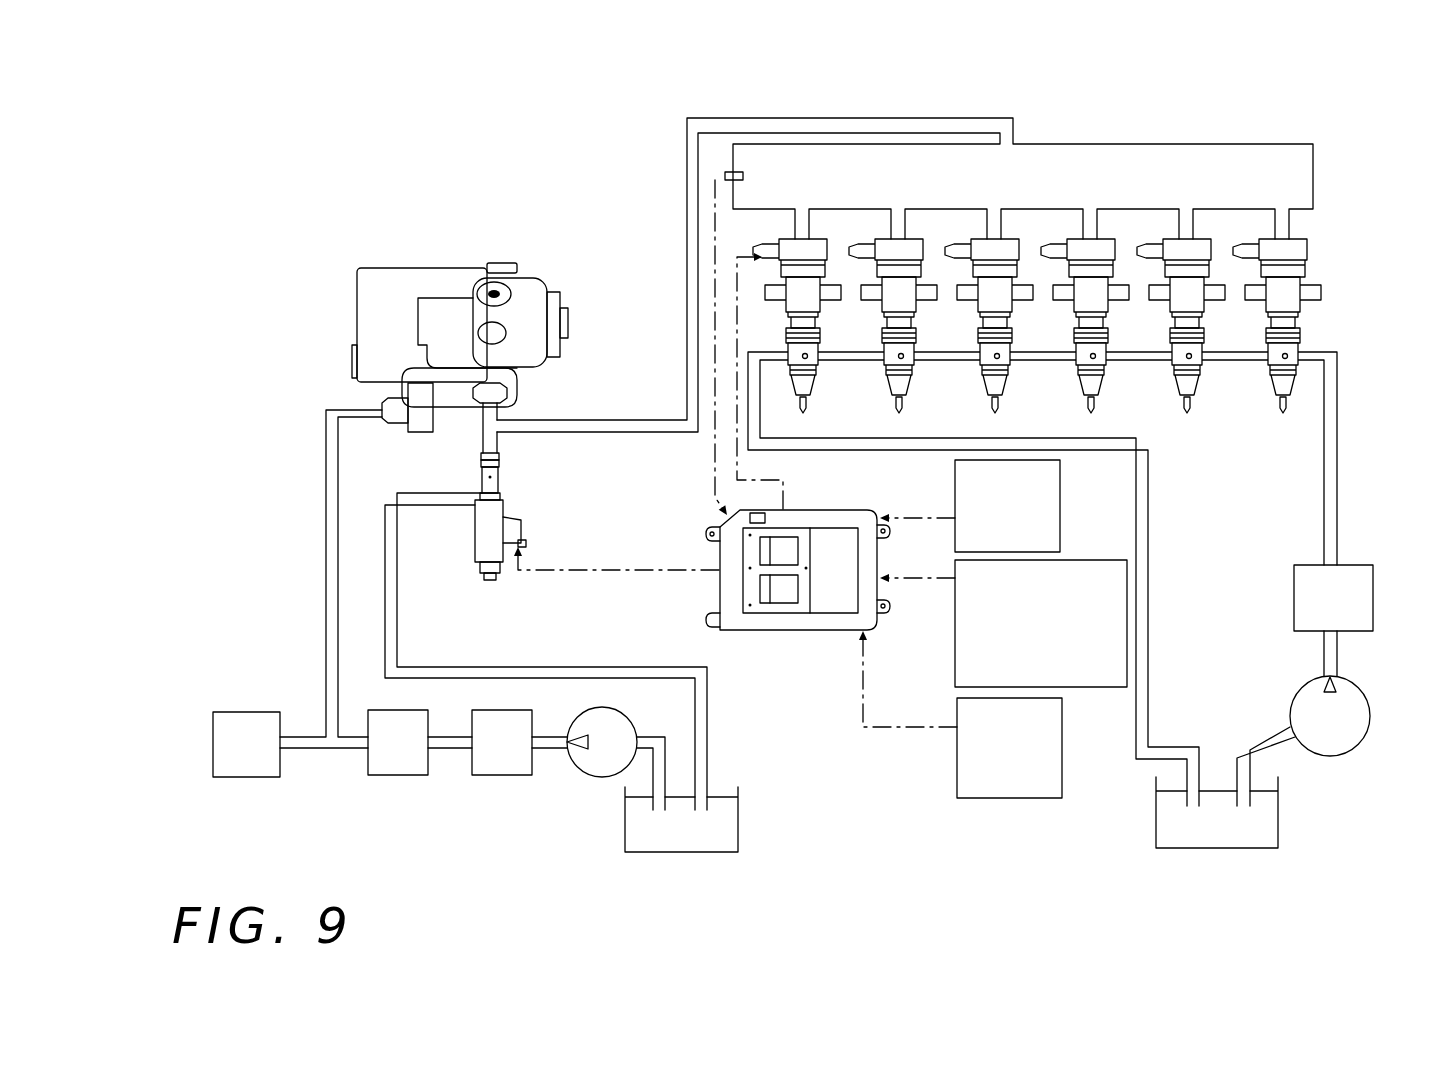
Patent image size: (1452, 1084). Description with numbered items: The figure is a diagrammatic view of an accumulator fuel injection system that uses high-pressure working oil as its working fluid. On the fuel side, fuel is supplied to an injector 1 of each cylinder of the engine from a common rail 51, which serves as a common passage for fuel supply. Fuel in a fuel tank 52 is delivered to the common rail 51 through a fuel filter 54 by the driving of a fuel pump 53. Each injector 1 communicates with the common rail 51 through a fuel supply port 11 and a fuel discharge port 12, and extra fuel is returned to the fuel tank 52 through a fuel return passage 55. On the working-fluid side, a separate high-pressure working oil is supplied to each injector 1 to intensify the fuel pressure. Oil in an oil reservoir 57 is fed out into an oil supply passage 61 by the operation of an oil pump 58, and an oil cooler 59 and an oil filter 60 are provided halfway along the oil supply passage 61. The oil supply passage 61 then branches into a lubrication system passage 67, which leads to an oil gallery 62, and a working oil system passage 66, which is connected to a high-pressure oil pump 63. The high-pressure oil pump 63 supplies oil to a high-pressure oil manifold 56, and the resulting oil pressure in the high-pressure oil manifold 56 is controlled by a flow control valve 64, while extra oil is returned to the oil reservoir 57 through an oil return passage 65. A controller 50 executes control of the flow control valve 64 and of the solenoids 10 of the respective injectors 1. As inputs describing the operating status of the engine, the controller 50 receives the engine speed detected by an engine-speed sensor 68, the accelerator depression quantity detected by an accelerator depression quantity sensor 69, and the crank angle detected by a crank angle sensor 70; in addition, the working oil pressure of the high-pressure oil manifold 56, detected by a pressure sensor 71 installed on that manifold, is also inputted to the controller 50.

The injector 1 is at (1041, 329).
The solenoid 10 is at (779, 245).
The fuel supply port 11 is at (825, 358).
The fuel discharge port 12 is at (788, 353).
The controller 50 is at (803, 621).
The common rail 51 is at (1035, 366).
The fuel tank 52 is at (1278, 832).
The fuel pump 53 is at (1371, 717).
The fuel filter 54 is at (1374, 590).
The fuel return passage 55 is at (1146, 573).
The high-pressure oil manifold 56 is at (1166, 170).
The oil reservoir 57 is at (738, 832).
The oil pump 58 is at (593, 767).
The oil cooler 59 is at (487, 767).
The oil filter 60 is at (382, 770).
The oil supply passage 61 is at (353, 745).
The oil gallery 62 is at (240, 773).
The high-pressure oil pump 63 is at (505, 360).
The flow control valve 64 is at (517, 515).
The oil return passage 65 is at (533, 672).
The working oil system passage 66 is at (692, 300).
The lubrication system passage 67 is at (307, 746).
The engine-speed sensor 68 is at (1062, 476).
The accelerator depression quantity sensor 69 is at (1098, 559).
The crank angle sensor 70 is at (1064, 727).
The pressure sensor 71 is at (726, 174).